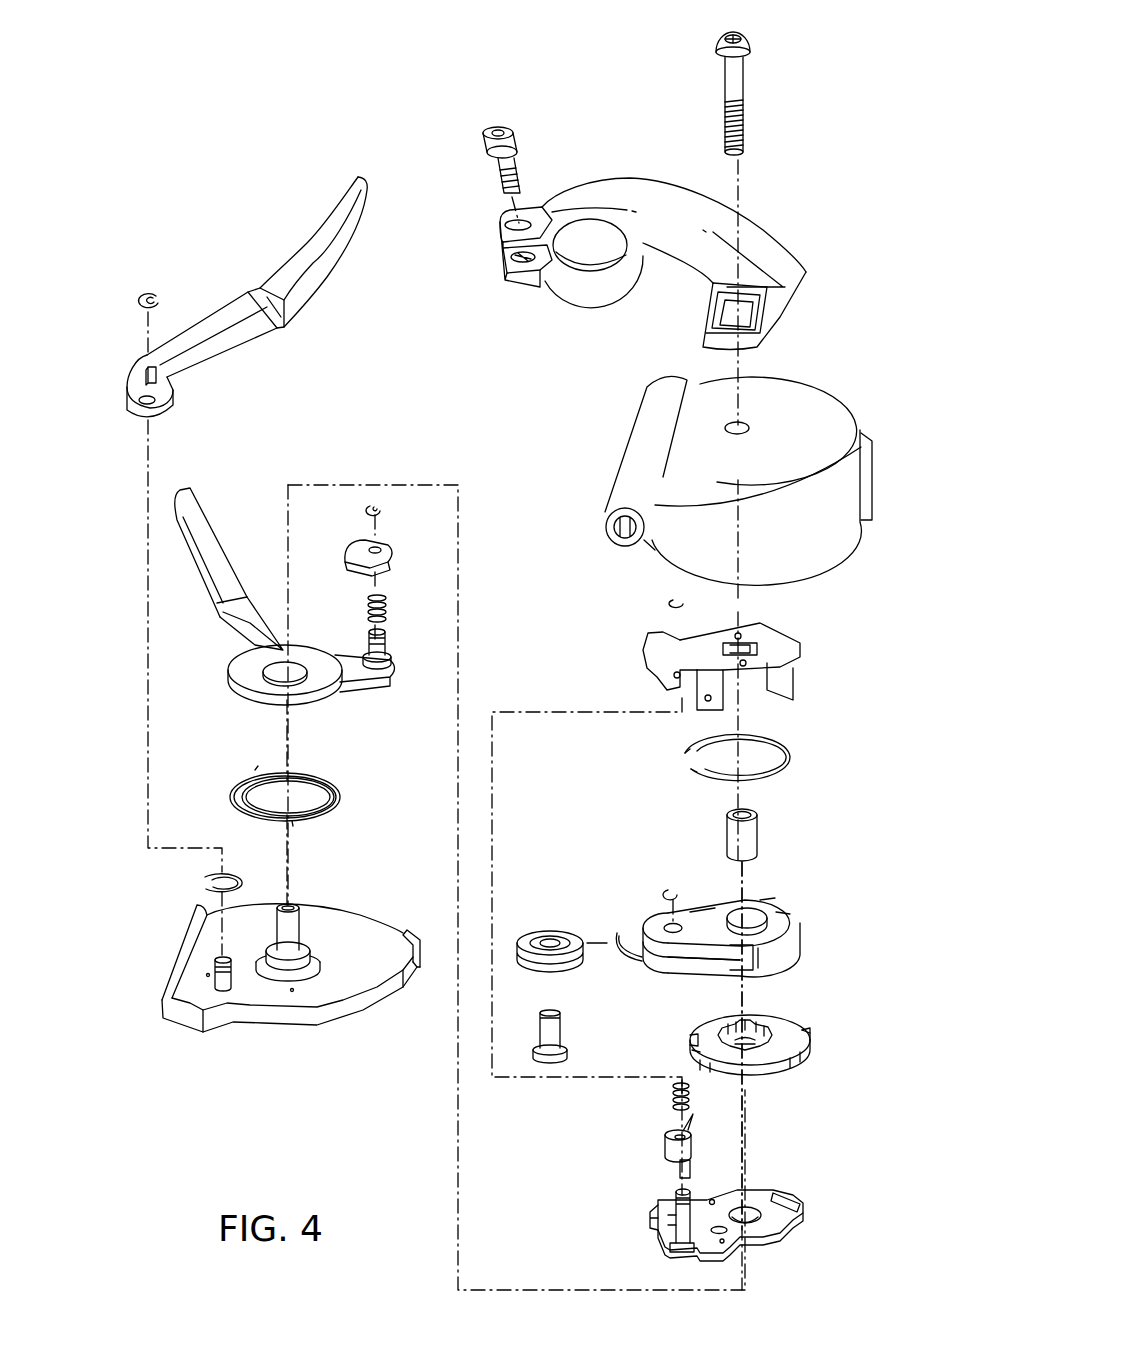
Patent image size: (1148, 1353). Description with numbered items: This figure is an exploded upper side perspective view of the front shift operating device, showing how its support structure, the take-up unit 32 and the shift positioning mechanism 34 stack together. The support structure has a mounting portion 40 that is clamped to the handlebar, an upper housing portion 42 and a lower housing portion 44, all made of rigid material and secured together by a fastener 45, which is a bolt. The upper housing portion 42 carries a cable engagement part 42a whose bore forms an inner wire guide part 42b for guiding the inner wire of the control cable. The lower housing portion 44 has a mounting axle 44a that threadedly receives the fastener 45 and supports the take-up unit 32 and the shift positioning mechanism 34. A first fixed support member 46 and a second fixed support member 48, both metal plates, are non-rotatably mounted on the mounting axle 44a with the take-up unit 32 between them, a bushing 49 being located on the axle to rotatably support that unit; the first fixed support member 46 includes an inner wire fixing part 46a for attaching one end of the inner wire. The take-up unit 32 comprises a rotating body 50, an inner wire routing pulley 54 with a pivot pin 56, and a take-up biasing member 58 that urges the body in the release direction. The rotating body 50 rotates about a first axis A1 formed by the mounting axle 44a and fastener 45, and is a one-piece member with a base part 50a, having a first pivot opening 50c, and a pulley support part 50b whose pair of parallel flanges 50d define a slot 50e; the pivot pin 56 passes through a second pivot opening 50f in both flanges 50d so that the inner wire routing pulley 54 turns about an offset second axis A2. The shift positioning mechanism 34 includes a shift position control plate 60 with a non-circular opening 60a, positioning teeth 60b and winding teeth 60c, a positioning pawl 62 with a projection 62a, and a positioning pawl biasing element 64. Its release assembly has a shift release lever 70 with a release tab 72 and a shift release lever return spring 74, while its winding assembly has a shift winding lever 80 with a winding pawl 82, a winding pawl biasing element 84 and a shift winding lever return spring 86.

The take-up unit 32 is at (841, 838).
The shift positioning mechanism 34 is at (628, 1161).
The mounting portion 40 is at (768, 228).
The upper housing portion 42 is at (697, 455).
The cable engagement part 42a is at (612, 487).
The inner wire guide part 42b is at (615, 541).
The lower housing portion 44 is at (291, 974).
The mounting axle 44a is at (301, 928).
The fastener 45 is at (745, 78).
The first fixed support member 46 is at (732, 671).
The inner wire fixing part 46a is at (700, 708).
The second fixed support member 48 is at (797, 1191).
The bushing 49 is at (723, 832).
The rotating body 50 is at (727, 924).
The base part 50a is at (781, 903).
The pulley support part 50b is at (696, 913).
The first pivot opening 50c is at (782, 914).
The flanges 50d is at (648, 935).
The slot 50e is at (701, 968).
The second pivot opening 50f is at (668, 924).
The inner wire routing pulley 54 is at (534, 917).
The pivot pin 56 is at (566, 1030).
The take-up biasing member 58 is at (799, 733).
The shift position control plate 60 is at (754, 1061).
The non-circular opening 60a is at (756, 1044).
The positioning teeth 60b is at (693, 1052).
The winding teeth 60c is at (812, 1033).
The positioning pawl 62 is at (652, 1144).
The projection 62a is at (678, 1172).
The positioning pawl biasing element 64 is at (693, 1098).
The shift release lever 70 is at (247, 297).
The release tab 72 is at (167, 388).
The shift release lever return spring 74 is at (201, 886).
The shift winding lever 80 is at (215, 533).
The winding pawl 82 is at (394, 553).
The winding pawl biasing element 84 is at (392, 596).
The shift winding lever return spring 86 is at (331, 783).
The first axis A1 is at (745, 995).
The second axis A2 is at (678, 985).